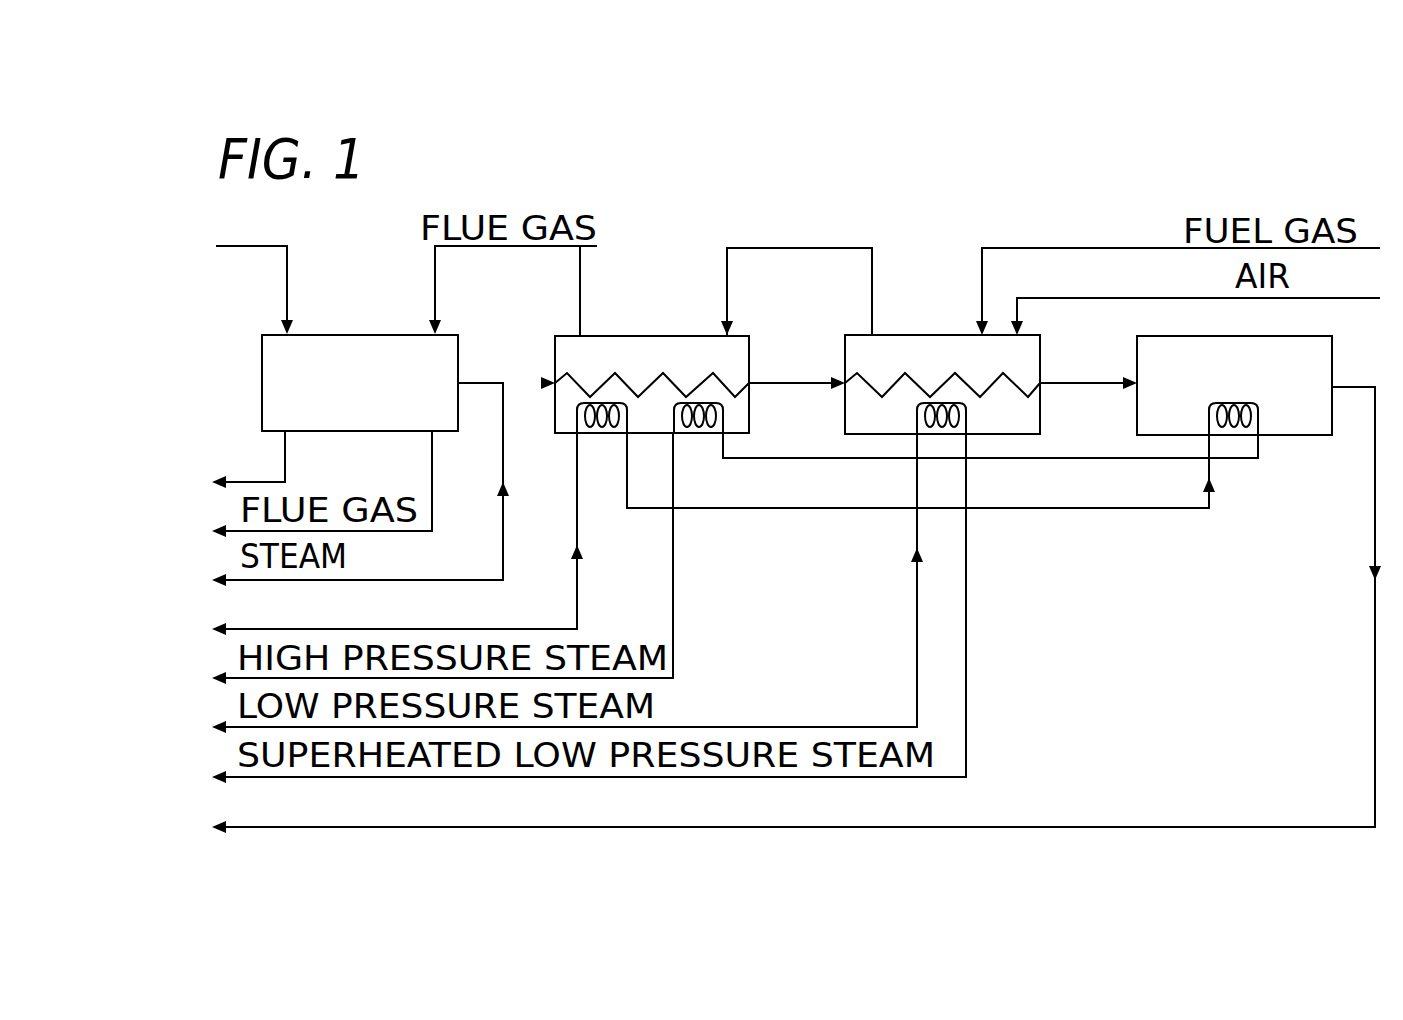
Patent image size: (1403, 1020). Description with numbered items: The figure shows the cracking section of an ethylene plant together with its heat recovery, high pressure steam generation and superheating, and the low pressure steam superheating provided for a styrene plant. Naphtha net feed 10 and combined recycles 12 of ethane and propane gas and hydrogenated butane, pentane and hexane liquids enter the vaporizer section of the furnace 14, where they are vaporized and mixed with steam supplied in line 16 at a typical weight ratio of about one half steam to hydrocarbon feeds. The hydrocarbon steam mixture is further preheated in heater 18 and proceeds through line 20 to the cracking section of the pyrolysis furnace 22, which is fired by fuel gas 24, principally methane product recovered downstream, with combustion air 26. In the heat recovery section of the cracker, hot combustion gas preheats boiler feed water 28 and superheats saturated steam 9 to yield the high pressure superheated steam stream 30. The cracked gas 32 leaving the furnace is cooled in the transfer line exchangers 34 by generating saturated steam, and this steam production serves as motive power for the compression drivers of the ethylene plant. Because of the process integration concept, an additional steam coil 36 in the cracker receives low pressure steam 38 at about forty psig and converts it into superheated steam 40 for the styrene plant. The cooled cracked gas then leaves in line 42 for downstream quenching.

The saturated steam 9 is at (760, 458).
The naphtha net feed 10 is at (266, 247).
The combined recycles 12 is at (286, 468).
The furnace 14 is at (323, 334).
The steam line 16 is at (503, 558).
The heater 18 is at (615, 334).
The line 20 is at (758, 383).
The pyrolysis furnace 22 is at (895, 334).
The fuel gas 24 is at (1090, 248).
The air line 26 is at (1053, 312).
The boiler feed water 28 is at (577, 598).
The superheated steam stream 30 is at (673, 560).
The cracked gas 32 is at (1048, 387).
The transfer line exchangers 34 is at (1280, 436).
The steam coil 36 is at (966, 418).
The low pressure steam 38 is at (917, 640).
The superheated low pressure steam for styrene plant 40 is at (966, 615).
The cracked gas line 42 is at (1128, 827).